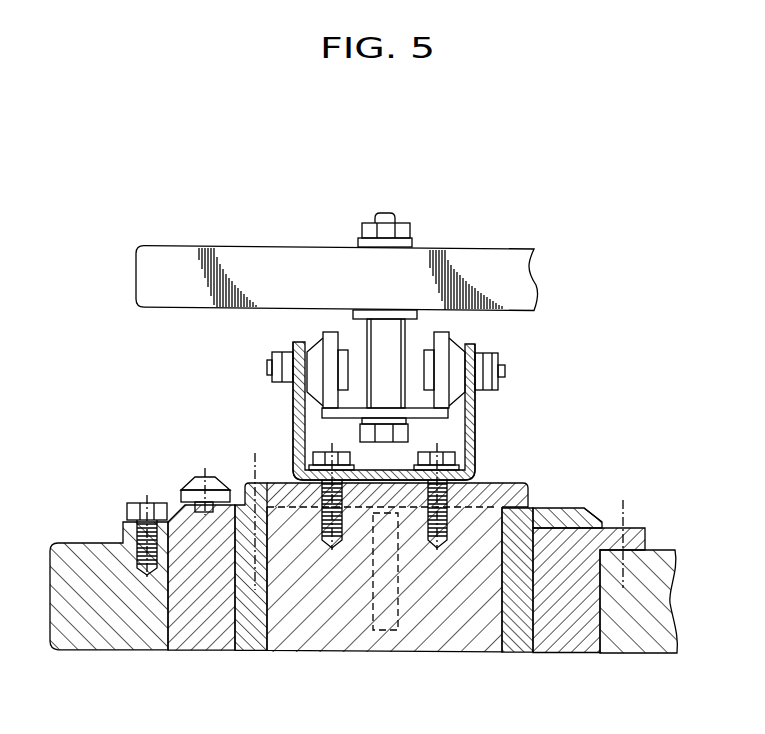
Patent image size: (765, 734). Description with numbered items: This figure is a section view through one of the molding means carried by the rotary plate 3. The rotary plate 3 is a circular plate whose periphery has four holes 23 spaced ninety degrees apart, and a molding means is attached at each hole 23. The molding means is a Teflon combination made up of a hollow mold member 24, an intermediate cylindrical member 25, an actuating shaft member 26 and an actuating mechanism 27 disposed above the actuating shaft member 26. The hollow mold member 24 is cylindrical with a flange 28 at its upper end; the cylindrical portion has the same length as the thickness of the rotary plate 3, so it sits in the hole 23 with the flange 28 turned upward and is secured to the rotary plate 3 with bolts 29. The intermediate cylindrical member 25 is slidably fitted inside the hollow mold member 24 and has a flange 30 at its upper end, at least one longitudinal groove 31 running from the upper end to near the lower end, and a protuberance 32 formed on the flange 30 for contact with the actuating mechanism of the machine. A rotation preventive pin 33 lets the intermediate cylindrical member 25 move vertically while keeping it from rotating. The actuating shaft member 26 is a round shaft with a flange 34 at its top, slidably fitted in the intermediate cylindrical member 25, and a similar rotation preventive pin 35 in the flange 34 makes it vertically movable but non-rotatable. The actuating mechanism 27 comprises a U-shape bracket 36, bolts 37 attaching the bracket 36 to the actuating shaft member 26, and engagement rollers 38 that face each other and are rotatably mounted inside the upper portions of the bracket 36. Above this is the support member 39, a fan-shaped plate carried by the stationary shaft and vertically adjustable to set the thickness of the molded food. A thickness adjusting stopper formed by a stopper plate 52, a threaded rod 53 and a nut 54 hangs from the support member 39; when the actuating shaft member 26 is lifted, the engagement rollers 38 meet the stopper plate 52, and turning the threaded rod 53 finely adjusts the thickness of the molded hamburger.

The rotary plate 3 is at (105, 617).
The holes 23 is at (173, 607).
The hollow mold member 24 is at (573, 625).
The intermediate cylindrical member 25 is at (518, 623).
The actuating shaft member 26 is at (470, 620).
The actuating mechanism 27 is at (531, 383).
The flange 28 is at (640, 537).
The bolts 29 is at (128, 508).
The flange 30 is at (588, 512).
The longitudinal groove 31 is at (383, 630).
The protuberance 32 is at (195, 481).
The rotation preventive pin 33 is at (570, 543).
The flange 34 is at (500, 497).
The rotation preventive pin 35 is at (255, 458).
The U-shape bracket 36 is at (477, 409).
The bolts 37 is at (307, 460).
The engagement rollers 38 is at (447, 338).
The support member 39 is at (250, 258).
The stopper plate 52 is at (293, 410).
The threaded rod 53 is at (385, 213).
The nut 54 is at (405, 225).